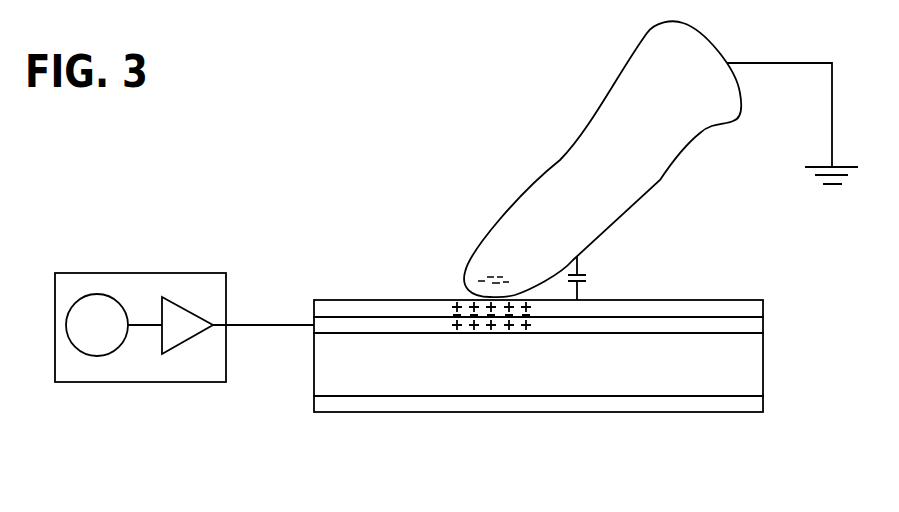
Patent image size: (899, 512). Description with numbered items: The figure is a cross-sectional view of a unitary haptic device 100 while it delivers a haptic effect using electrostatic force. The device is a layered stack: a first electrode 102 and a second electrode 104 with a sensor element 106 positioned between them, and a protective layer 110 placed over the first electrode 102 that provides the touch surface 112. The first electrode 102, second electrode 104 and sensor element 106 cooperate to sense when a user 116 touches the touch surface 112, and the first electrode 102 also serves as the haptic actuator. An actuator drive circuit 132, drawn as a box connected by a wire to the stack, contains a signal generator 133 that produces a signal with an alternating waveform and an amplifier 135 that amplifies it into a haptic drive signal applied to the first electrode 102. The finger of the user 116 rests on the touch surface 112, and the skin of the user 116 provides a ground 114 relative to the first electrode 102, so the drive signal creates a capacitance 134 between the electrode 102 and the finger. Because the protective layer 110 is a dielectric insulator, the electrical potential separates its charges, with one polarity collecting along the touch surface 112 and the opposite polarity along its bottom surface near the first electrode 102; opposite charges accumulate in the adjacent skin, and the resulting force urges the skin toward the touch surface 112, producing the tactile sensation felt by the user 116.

The unitary haptic device 100 is at (683, 284).
The first electrode 102 is at (763, 325).
The second electrode 104 is at (763, 405).
The sensor element 106 is at (763, 367).
The protective layer 110 is at (763, 303).
The touch surface 112 is at (438, 300).
The ground 114 is at (832, 108).
The user 116 is at (578, 142).
The actuator drive circuit 132 is at (172, 346).
The signal generator 133 is at (102, 357).
The capacitance 134 is at (578, 268).
The amplifier 135 is at (183, 343).